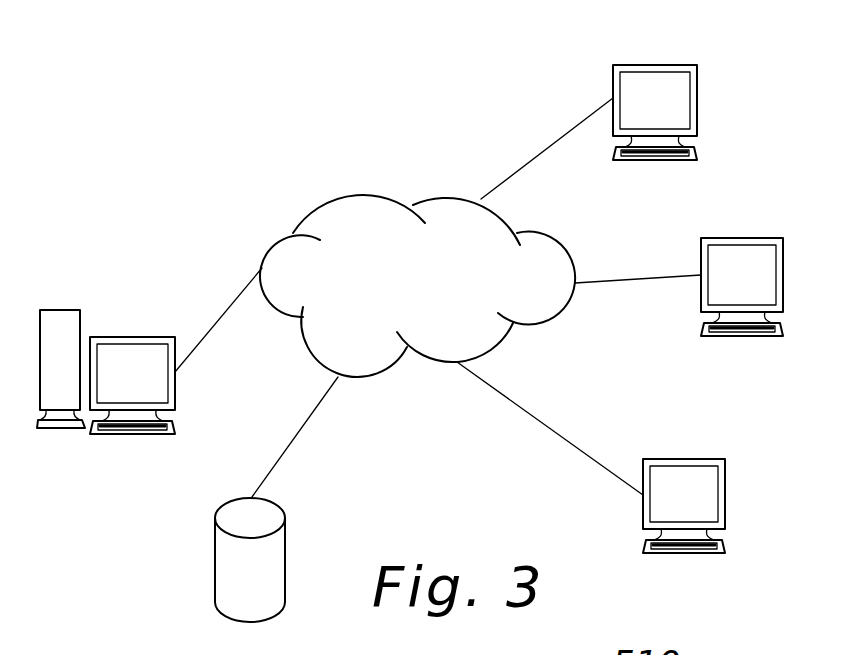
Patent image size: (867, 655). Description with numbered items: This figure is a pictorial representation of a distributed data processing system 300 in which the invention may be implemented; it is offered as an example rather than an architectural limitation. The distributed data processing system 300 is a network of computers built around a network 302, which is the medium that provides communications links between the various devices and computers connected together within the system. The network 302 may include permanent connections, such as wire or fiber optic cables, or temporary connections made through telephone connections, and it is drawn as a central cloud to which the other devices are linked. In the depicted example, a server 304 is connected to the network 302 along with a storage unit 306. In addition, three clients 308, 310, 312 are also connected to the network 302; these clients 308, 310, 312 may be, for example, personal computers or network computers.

The distributed data processing system 300 is at (438, 483).
The network 302 is at (432, 278).
The server 304 is at (132, 337).
The storage unit 306 is at (215, 560).
The client 308 is at (613, 80).
The client 310 is at (742, 238).
The client 312 is at (683, 555).